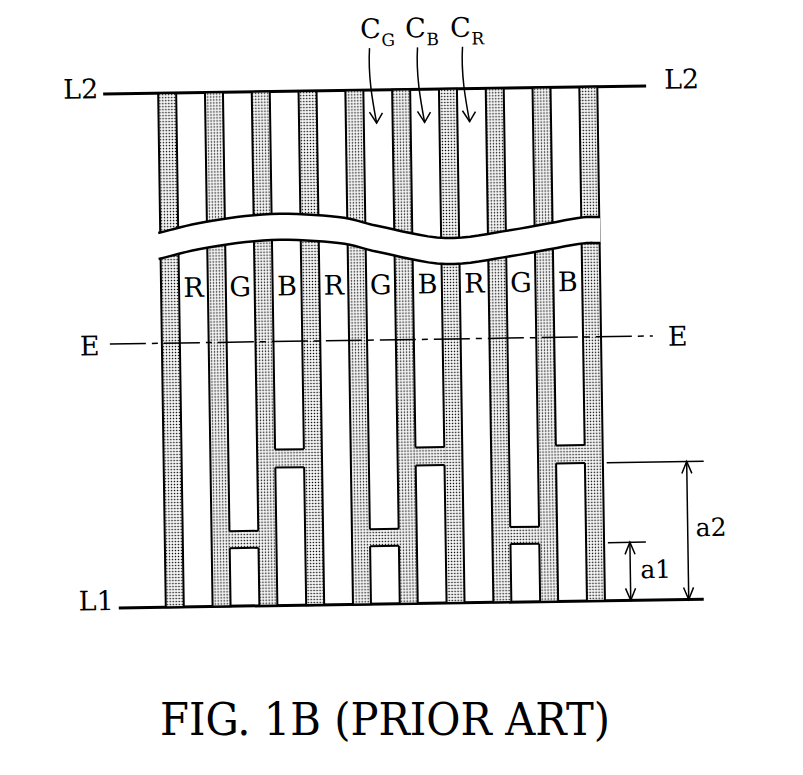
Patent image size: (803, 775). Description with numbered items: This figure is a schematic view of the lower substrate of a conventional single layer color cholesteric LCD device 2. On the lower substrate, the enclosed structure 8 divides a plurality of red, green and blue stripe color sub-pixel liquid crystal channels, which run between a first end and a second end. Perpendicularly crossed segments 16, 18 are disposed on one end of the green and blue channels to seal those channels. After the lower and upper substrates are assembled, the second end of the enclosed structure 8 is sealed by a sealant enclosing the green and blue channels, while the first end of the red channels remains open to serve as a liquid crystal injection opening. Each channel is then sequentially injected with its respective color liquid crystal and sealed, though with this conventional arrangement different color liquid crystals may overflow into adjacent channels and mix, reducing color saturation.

The display device 2 is at (396, 347).
The enclosed structure 8 is at (162, 164).
The perpendicularly crossed segment 16 is at (382, 548).
The perpendicularly crossed segment 18 is at (427, 467).